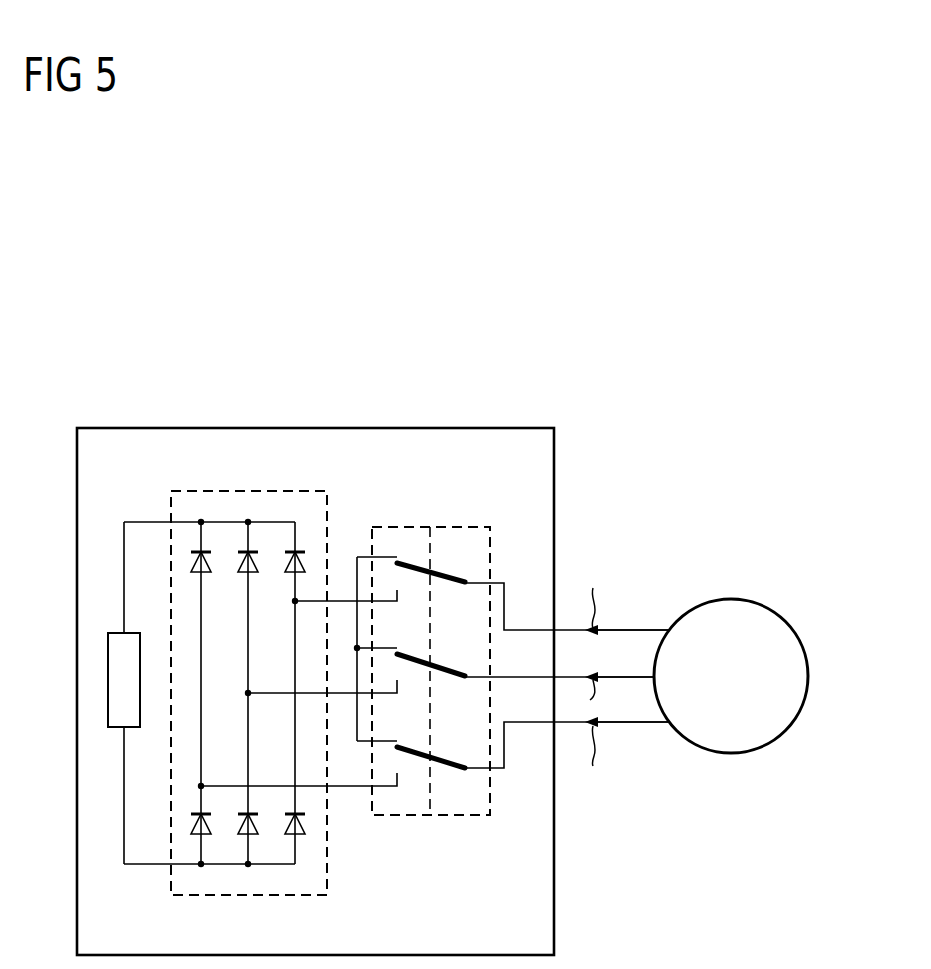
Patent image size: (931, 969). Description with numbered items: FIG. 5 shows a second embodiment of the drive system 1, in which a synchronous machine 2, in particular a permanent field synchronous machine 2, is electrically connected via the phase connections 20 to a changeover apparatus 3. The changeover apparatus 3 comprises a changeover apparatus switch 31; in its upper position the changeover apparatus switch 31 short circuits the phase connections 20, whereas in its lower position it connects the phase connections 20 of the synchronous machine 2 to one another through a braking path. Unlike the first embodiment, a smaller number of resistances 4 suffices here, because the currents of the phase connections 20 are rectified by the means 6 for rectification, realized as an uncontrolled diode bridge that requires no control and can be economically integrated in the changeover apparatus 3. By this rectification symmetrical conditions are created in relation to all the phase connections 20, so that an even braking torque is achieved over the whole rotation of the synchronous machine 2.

The drive system 1 is at (204, 390).
The synchronous machine 2 is at (730, 599).
The changeover apparatus 3 is at (556, 860).
The resistance 4 is at (108, 683).
The means for rectification 6 is at (300, 490).
The phase connections 20 is at (641, 628).
The changeover apparatus switch 31 is at (448, 526).